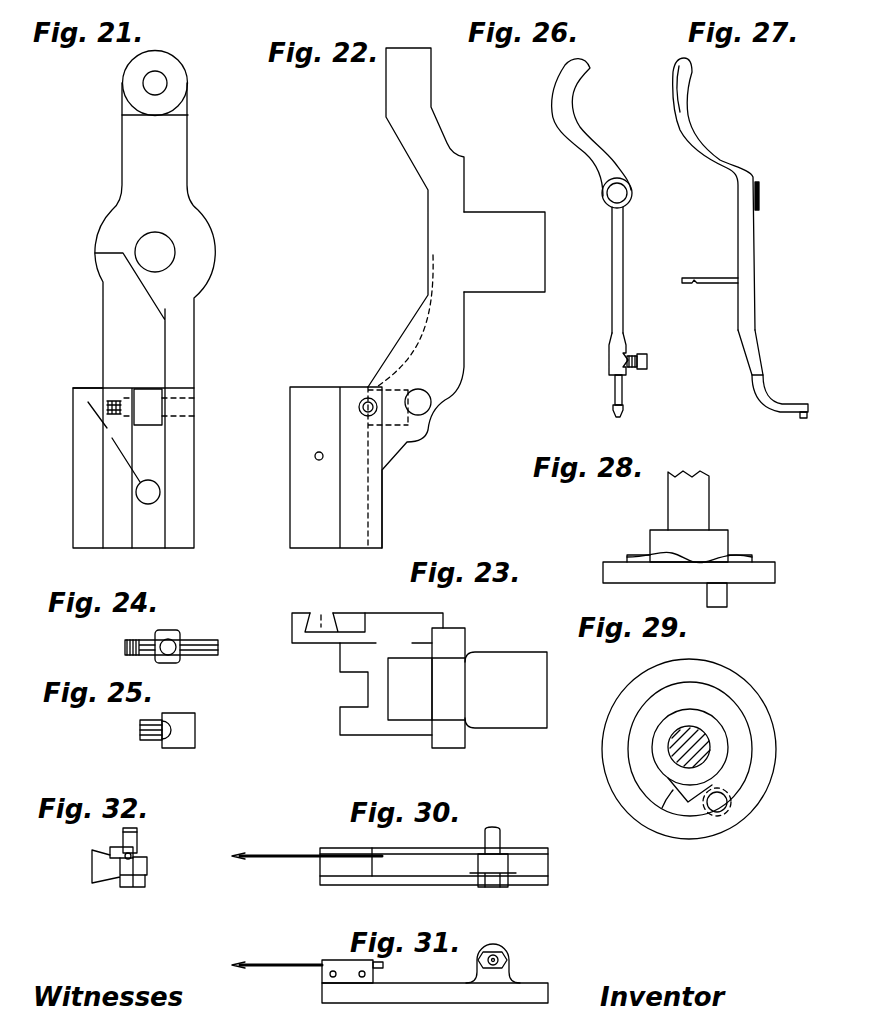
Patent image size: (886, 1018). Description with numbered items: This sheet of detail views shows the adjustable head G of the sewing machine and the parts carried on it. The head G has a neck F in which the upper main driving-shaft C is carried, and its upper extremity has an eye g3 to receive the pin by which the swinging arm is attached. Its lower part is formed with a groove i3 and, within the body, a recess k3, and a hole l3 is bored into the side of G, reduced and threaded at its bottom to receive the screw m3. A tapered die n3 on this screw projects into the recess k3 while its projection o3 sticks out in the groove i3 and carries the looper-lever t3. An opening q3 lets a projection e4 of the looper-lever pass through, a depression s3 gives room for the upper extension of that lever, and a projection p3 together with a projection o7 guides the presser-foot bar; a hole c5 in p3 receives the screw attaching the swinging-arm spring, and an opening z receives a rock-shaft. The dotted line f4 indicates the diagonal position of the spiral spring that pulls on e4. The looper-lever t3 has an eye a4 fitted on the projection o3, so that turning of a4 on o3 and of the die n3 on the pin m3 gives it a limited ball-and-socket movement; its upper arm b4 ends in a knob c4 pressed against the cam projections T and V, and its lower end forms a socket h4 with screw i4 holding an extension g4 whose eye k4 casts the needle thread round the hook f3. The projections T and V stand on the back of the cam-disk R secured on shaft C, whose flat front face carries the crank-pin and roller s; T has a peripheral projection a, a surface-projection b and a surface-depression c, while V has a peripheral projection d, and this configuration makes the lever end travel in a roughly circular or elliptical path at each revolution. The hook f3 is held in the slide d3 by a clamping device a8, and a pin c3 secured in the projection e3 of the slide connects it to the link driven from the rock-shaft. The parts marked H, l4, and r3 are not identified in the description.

In FIG. 21, the adjustable head G is at (155, 315).
In FIG. 22, the adjustable head G is at (416, 298).
In FIG. 23, the adjustable head G is at (402, 688).
In FIG. 21, the eye g3 is at (178, 81).
In FIG. 22, the eye g3 is at (386, 91).
In FIG. 23, the eye g3 is at (426, 689).
In FIG. 21, the pivot hole H is at (166, 256).
In FIG. 21, the depression s3 is at (136, 328).
In FIG. 22, the depression s3 is at (427, 338).
In FIG. 21, the projection p3 is at (82, 478).
In FIG. 22, the projection p3 is at (292, 422).
In FIG. 23, the projection p3 is at (383, 612).
In FIG. 21, the recess k3 is at (150, 398).
In FIG. 22, the recess k3 is at (402, 422).
In FIG. 21, the hole l3 is at (192, 407).
In FIG. 22, the hole l3 is at (364, 399).
In FIG. 21, the dotted line f4 is at (87, 406).
In FIG. 21, the groove i3 is at (149, 456).
In FIG. 23, the groove i3 is at (346, 688).
In FIG. 21, the opening q3 is at (152, 492).
In FIG. 22, the opening q3 is at (377, 490).
In FIG. 21, the lug l4 is at (144, 517).
In FIG. 22, the lug l4 is at (322, 502).
In FIG. 23, the lug l4 is at (340, 723).
In FIG. 22, the neck F is at (504, 252).
In FIG. 23, the neck F is at (506, 690).
In FIG. 22, the hole c5 is at (315, 458).
In FIG. 22, the opening z is at (425, 403).
In FIG. 23, the notch r3 is at (335, 608).
In FIG. 23, the projection o7 is at (346, 612).
In FIG. 24, the screw m3 is at (193, 657).
In FIG. 25, the screw m3 is at (160, 741).
In FIG. 24, the die n3 is at (180, 632).
In FIG. 25, the die n3 is at (180, 728).
In FIG. 24, the projection o3 is at (160, 650).
In FIG. 25, the projection o3 is at (140, 730).
In FIG. 32, the pin c3 is at (140, 834).
In FIG. 30, the pin c3 is at (502, 832).
In FIG. 31, the pin c3 is at (497, 956).
In FIG. 32, the clamping device a8 is at (118, 848).
In FIG. 30, the clamping device a8 is at (338, 846).
In FIG. 31, the clamping device a8 is at (322, 960).
In FIG. 32, the slide d3 is at (97, 870).
In FIG. 30, the slide d3 is at (425, 870).
In FIG. 31, the slide d3 is at (444, 993).
In FIG. 32, the projection e3 is at (147, 862).
In FIG. 30, the projection e3 is at (510, 860).
In FIG. 31, the projection e3 is at (510, 968).
In FIG. 32, the hook or needle f3 is at (131, 856).
In FIG. 30, the hook or needle f3 is at (284, 861).
In FIG. 31, the hook or needle f3 is at (263, 964).
In FIG. 26, the upper arm b4 is at (573, 128).
In FIG. 27, the upper arm b4 is at (698, 131).
In FIG. 26, the knob c4 is at (588, 68).
In FIG. 27, the knob c4 is at (690, 68).
In FIG. 26, the eye a4 is at (632, 193).
In FIG. 27, the eye a4 is at (760, 195).
In FIG. 26, the looper-lever t3 is at (623, 255).
In FIG. 27, the looper-lever t3 is at (757, 255).
In FIG. 26, the socket h4 is at (609, 358).
In FIG. 27, the socket h4 is at (760, 360).
In FIG. 26, the screw i4 is at (648, 360).
In FIG. 26, the extension g4 is at (624, 395).
In FIG. 27, the extension g4 is at (765, 396).
In FIG. 26, the eye k4 is at (613, 407).
In FIG. 27, the eye k4 is at (803, 403).
In FIG. 27, the projection e4 is at (716, 285).
In FIG. 28, the upper main driving-shaft C is at (688, 500).
In FIG. 29, the upper main driving-shaft C is at (668, 748).
In FIG. 28, the projection V is at (689, 546).
In FIG. 29, the projection V is at (722, 747).
In FIG. 28, the projection T is at (740, 553).
In FIG. 29, the projection T is at (733, 715).
In FIG. 28, the surface-projection b is at (656, 553).
In FIG. 29, the surface-projection b is at (672, 806).
In FIG. 28, the cam-disk R is at (775, 572).
In FIG. 29, the cam-disk R is at (778, 766).
In FIG. 28, the crank-pin and roller s is at (727, 601).
In FIG. 29, the crank-pin and roller s is at (715, 815).
In FIG. 28, the peripheral projection a is at (683, 590).
In FIG. 29, the peripheral projection a is at (690, 826).
In FIG. 28, the surface-depression c is at (688, 599).
In FIG. 29, the surface-depression c is at (698, 812).
In FIG. 29, the peripheral projection d is at (675, 790).